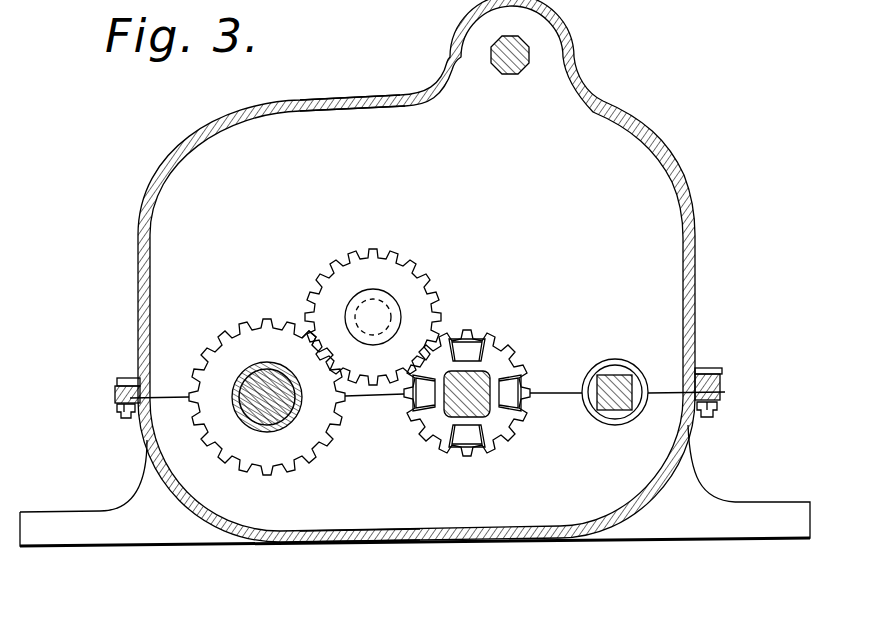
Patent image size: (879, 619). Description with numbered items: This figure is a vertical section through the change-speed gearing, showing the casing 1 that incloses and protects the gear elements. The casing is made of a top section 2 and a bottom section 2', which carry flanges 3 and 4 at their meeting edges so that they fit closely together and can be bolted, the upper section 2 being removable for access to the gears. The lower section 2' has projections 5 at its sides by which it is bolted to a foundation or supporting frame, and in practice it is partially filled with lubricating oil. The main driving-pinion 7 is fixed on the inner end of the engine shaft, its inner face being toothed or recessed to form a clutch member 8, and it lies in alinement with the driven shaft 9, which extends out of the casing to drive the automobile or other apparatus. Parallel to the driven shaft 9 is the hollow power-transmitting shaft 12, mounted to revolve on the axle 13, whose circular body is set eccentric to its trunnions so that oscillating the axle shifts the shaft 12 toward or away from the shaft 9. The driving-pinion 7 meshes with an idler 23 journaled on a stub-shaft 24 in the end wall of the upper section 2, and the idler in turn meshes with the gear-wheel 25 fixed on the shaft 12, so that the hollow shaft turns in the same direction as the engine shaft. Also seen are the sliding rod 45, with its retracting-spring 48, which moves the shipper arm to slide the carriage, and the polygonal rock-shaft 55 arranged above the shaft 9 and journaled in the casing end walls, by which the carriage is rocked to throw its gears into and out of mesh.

The casing 1 is at (337, 96).
The top casing section 2 is at (401, 271).
The bottom casing section 2' is at (341, 557).
The flange 3 is at (115, 387).
The flange 4 is at (116, 407).
The projections 5 is at (77, 511).
The main driving-pinion 7 is at (516, 356).
The clutch member 8 is at (464, 343).
The driven shaft 9 is at (446, 416).
The hollow power-transmitting shaft 12 is at (258, 428).
The axle 13 is at (282, 413).
The idler 23 is at (375, 250).
The stub-shaft 24 is at (387, 300).
The gear-wheel 25 is at (300, 470).
The sliding rod 45 is at (610, 377).
The retracting-spring 48 is at (614, 420).
The rock-shaft 55 is at (508, 73).